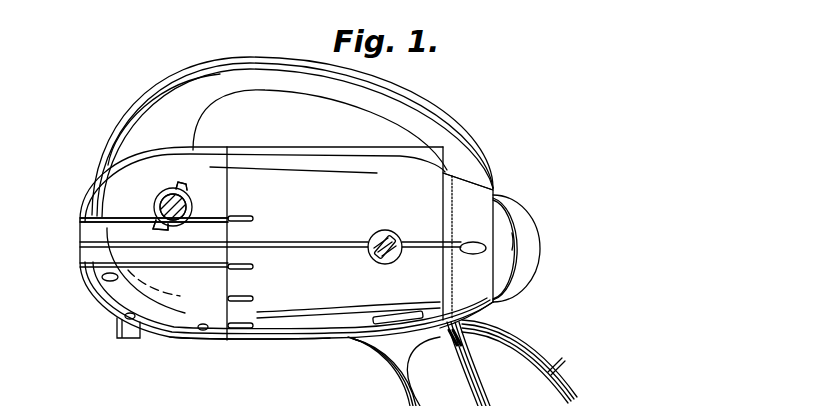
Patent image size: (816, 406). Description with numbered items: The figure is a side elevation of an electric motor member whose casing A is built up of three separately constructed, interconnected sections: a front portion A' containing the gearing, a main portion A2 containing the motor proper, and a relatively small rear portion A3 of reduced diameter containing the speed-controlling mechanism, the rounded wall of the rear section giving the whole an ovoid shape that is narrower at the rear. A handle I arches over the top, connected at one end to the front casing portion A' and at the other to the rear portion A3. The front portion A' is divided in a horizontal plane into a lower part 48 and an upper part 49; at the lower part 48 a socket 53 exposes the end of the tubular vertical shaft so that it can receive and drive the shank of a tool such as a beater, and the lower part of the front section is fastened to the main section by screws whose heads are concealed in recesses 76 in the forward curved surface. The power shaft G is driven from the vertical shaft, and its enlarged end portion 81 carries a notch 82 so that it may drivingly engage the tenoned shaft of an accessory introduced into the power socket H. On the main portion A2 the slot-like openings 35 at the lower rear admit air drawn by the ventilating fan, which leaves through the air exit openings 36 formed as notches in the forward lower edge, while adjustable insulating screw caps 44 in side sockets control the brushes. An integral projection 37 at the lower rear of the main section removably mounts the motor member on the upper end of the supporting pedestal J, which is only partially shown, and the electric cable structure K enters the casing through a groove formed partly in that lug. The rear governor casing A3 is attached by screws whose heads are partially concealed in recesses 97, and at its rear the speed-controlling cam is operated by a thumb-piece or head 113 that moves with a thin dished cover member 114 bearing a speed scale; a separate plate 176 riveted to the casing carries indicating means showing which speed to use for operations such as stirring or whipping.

The handle I is at (396, 107).
The front portion of casing A' is at (257, 174).
The casing A is at (286, 227).
The main portion of casing A2 is at (293, 315).
The rear portion of casing A3 is at (490, 305).
The enlarged portion of power shaft 81 is at (167, 197).
The notch 82 is at (187, 197).
The power shaft G is at (200, 211).
The power socket H is at (182, 226).
The upper part of gearing casing 49 is at (100, 228).
The recesses 76 is at (103, 277).
The socket 53 is at (118, 327).
The lower part of gearing casing 48 is at (180, 318).
The air exit openings 36 is at (250, 268).
The slot-like openings 35 is at (393, 316).
The adjustable screw caps 44 is at (385, 229).
The integral projection 37 is at (392, 340).
The supporting pedestal J is at (470, 398).
The electric cable structure K is at (572, 385).
The recesses 97 is at (482, 249).
The thumb-piece or head 113 is at (530, 228).
The dished cover member 114 is at (507, 218).
The plate 176 is at (487, 193).